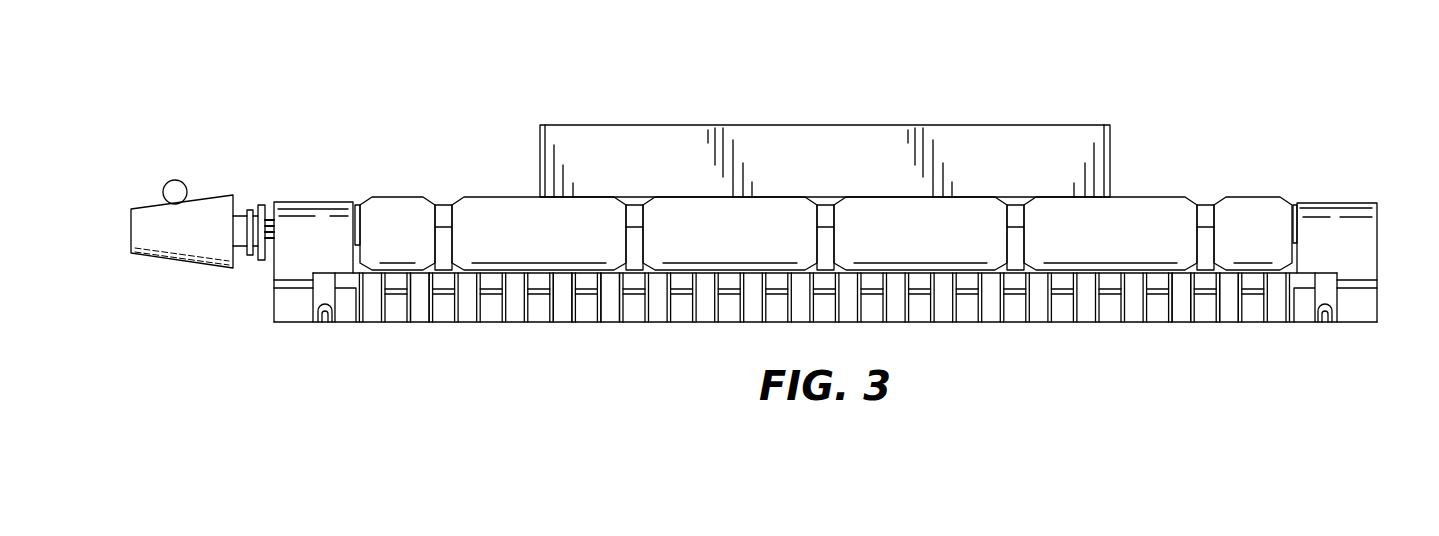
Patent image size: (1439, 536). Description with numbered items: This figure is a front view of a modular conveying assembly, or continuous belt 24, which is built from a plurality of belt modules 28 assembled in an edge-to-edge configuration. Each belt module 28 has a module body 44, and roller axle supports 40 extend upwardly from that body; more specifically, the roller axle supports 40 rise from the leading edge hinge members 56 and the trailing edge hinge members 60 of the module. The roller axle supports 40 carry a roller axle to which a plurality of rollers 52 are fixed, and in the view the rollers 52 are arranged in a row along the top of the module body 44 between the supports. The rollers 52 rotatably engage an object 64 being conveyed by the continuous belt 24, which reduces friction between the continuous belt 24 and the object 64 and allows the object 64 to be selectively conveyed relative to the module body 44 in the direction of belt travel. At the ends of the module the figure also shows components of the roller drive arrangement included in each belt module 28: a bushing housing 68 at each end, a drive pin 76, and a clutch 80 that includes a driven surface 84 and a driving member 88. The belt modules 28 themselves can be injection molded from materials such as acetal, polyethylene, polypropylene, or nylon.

The continuous belt 24 is at (1352, 172).
The belt module 28 is at (320, 297).
The roller axle support 40 is at (442, 215).
The module body 44 is at (283, 298).
The roller 52 is at (400, 220).
The leading edge hinge member 56 is at (560, 322).
The trailing edge hinge member 60 is at (443, 322).
The object 64 is at (958, 136).
The bushing housing 68 is at (320, 233).
The drive pin 76 is at (254, 207).
The clutch 80 is at (168, 147).
The driven surface 84 is at (180, 250).
The driving member 88 is at (174, 180).